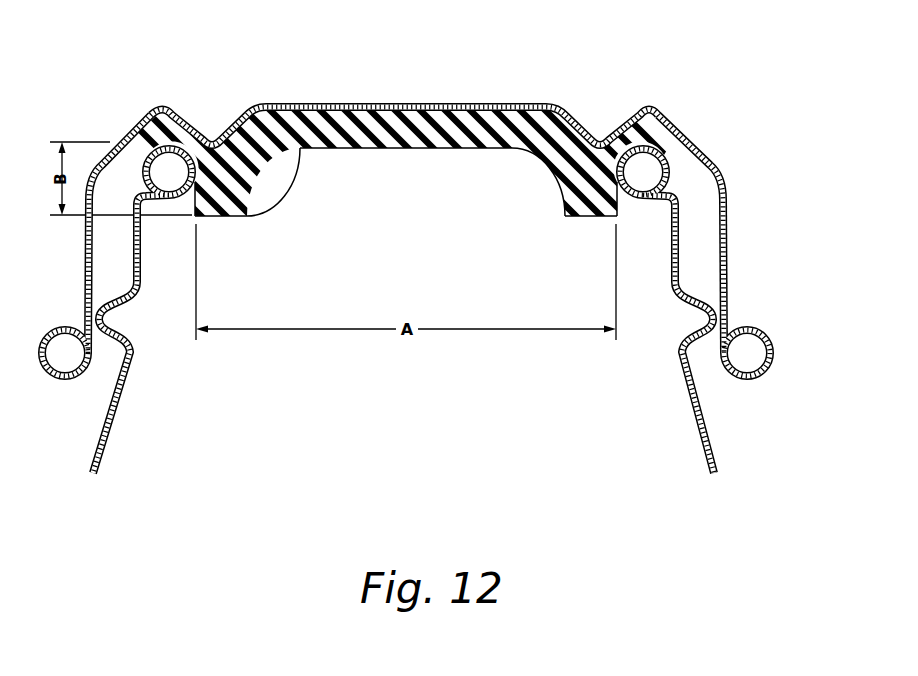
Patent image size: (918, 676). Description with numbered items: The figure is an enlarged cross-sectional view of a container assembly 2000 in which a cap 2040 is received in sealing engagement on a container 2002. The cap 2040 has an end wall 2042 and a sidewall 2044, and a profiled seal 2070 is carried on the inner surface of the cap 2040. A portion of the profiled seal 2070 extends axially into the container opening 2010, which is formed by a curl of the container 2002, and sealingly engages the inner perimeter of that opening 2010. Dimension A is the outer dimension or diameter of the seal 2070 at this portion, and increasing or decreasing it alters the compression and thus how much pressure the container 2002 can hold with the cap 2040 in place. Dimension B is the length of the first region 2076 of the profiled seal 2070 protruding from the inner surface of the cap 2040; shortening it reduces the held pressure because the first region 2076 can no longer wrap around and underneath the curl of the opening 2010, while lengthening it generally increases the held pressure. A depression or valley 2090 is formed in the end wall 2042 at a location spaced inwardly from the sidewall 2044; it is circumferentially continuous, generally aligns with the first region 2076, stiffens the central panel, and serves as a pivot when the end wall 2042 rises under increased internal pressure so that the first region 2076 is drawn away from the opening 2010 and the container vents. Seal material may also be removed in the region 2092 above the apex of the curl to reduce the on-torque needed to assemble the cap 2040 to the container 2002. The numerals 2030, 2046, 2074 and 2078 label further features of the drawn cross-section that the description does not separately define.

The container assembly 2000 is at (402, 247).
The container 2002 is at (706, 447).
The container opening 2010 is at (375, 186).
The curled loop 2030 is at (163, 150).
The cap 2040 is at (735, 237).
The end wall 2042 is at (467, 104).
The sidewall 2044 is at (730, 284).
The upper portion of sealing body 2046 is at (425, 120).
The profiled seal 2070 is at (325, 152).
The crest 2074 is at (646, 92).
The first region of the profiled seal 2076 is at (566, 205).
The sloped wall 2078 is at (672, 118).
The depression 2090 is at (212, 138).
The region of removed seal material 2092 is at (666, 147).